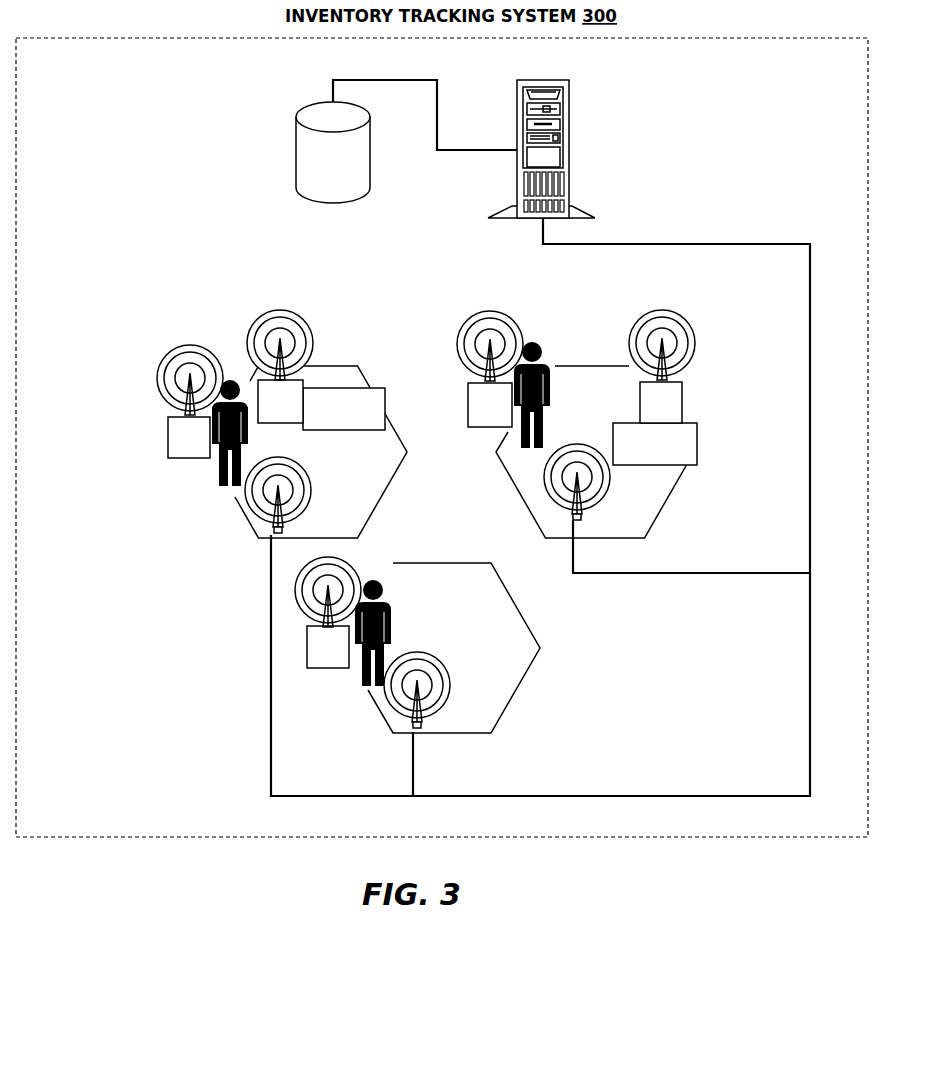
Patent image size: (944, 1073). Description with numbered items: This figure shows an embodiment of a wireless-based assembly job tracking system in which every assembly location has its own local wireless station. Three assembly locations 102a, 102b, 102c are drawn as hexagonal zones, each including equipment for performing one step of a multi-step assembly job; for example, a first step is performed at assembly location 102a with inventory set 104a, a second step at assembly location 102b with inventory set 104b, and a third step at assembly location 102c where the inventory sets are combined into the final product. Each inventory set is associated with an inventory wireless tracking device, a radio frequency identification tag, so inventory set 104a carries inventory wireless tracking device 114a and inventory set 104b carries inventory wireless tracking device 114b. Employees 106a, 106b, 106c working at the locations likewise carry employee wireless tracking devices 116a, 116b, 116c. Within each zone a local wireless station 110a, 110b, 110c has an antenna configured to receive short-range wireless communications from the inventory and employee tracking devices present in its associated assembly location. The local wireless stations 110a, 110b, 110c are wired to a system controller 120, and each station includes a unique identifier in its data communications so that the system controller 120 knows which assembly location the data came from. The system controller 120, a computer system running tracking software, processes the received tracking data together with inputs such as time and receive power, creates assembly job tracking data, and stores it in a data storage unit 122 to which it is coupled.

The assembly location 102a is at (321, 452).
The assembly location 102b is at (591, 452).
The assembly location 102c is at (454, 648).
The inventory set 104a is at (387, 409).
The inventory set 104b is at (698, 441).
The employee 106a is at (231, 489).
The employee 106b is at (533, 449).
The employee 106c is at (381, 592).
The local wireless station 110a is at (258, 520).
The local wireless station 110b is at (556, 502).
The local wireless station 110c is at (400, 710).
The inventory wireless tracking device 114a is at (258, 326).
The inventory wireless tracking device 114b is at (632, 337).
The employee wireless tracking device 116a is at (168, 440).
The employee wireless tracking device 116b is at (468, 396).
The employee wireless tracking device 116c is at (330, 668).
The system controller 120 is at (569, 96).
The data storage unit 122 is at (296, 142).